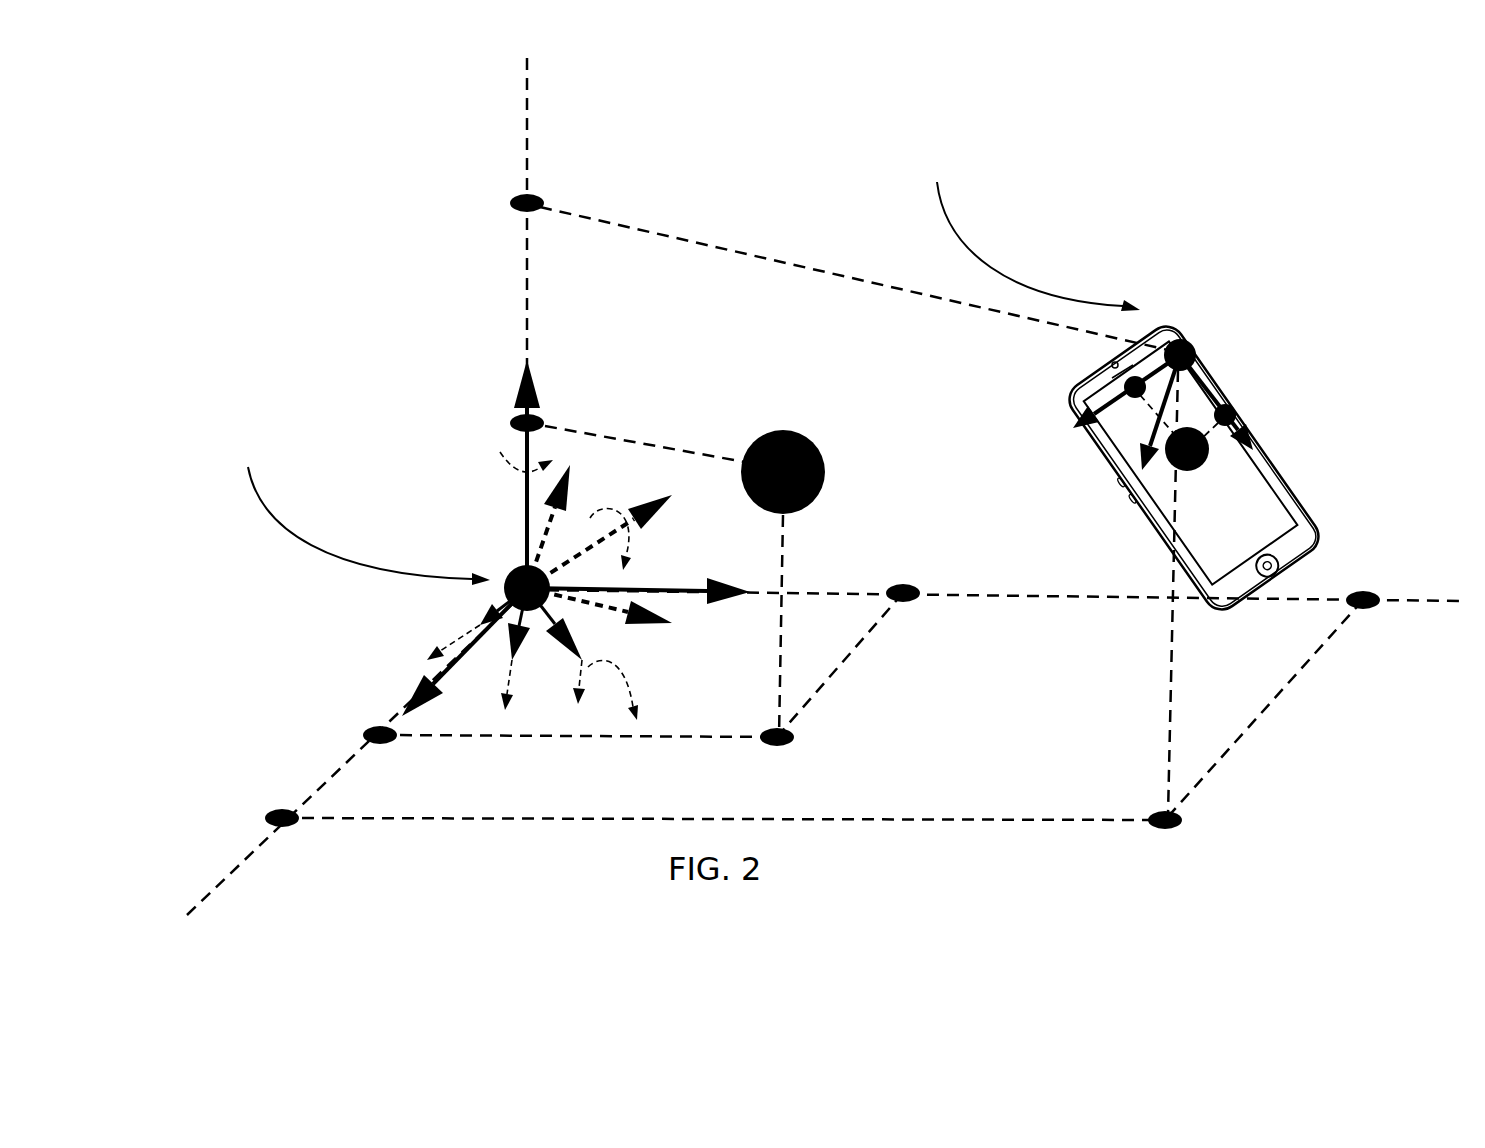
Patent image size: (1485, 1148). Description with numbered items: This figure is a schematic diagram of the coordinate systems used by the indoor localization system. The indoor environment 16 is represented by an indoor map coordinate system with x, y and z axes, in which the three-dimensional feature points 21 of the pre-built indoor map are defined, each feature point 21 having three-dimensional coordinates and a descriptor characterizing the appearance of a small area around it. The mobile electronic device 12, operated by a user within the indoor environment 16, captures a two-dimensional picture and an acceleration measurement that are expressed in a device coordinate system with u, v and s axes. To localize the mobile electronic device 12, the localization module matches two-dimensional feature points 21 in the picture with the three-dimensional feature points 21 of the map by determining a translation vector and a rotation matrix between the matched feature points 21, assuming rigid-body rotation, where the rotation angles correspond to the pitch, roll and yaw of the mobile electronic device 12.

The mobile electronic device 12 is at (1297, 491).
The indoor environment 16 is at (488, 296).
The feature point 21 is at (805, 432).